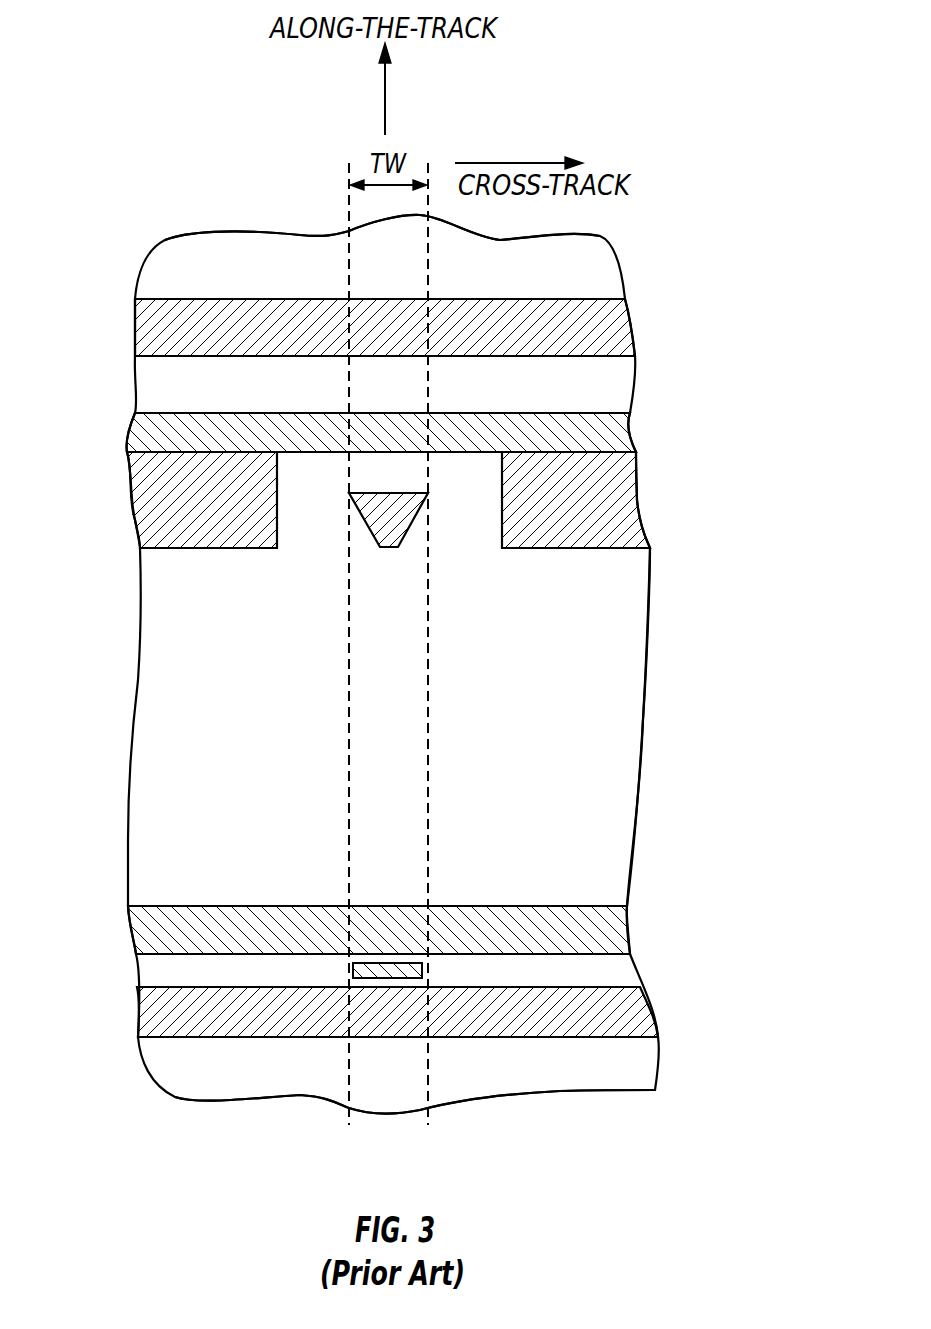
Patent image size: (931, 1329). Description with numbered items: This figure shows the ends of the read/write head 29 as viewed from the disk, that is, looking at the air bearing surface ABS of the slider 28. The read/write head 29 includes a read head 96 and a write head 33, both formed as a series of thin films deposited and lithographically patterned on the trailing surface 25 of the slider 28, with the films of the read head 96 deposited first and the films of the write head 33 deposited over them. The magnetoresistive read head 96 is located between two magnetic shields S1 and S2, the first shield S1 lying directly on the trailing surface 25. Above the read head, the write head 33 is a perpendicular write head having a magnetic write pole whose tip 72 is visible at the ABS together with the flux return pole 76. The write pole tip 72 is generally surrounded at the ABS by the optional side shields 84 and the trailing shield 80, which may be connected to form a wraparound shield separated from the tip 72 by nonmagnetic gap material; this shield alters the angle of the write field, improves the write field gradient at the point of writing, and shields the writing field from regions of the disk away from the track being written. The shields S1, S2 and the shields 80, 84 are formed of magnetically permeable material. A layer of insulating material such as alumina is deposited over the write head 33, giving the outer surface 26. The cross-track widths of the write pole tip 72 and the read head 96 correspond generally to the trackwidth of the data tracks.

The outer surface 26 is at (597, 258).
The flux return pole 76 is at (600, 313).
The trailing shield 80 is at (618, 430).
The side shields 84 is at (202, 530).
The write pole tip 72 is at (390, 538).
The air bearing surface ABS is at (629, 686).
The second magnetic shield S2 is at (608, 935).
The read head 96 is at (422, 972).
The first magnetic shield S1 is at (618, 1007).
The trailing surface 25 is at (503, 1038).
The slider 28 is at (648, 1065).
The read/write head 29 is at (95, 298).
The write head 33 is at (714, 295).